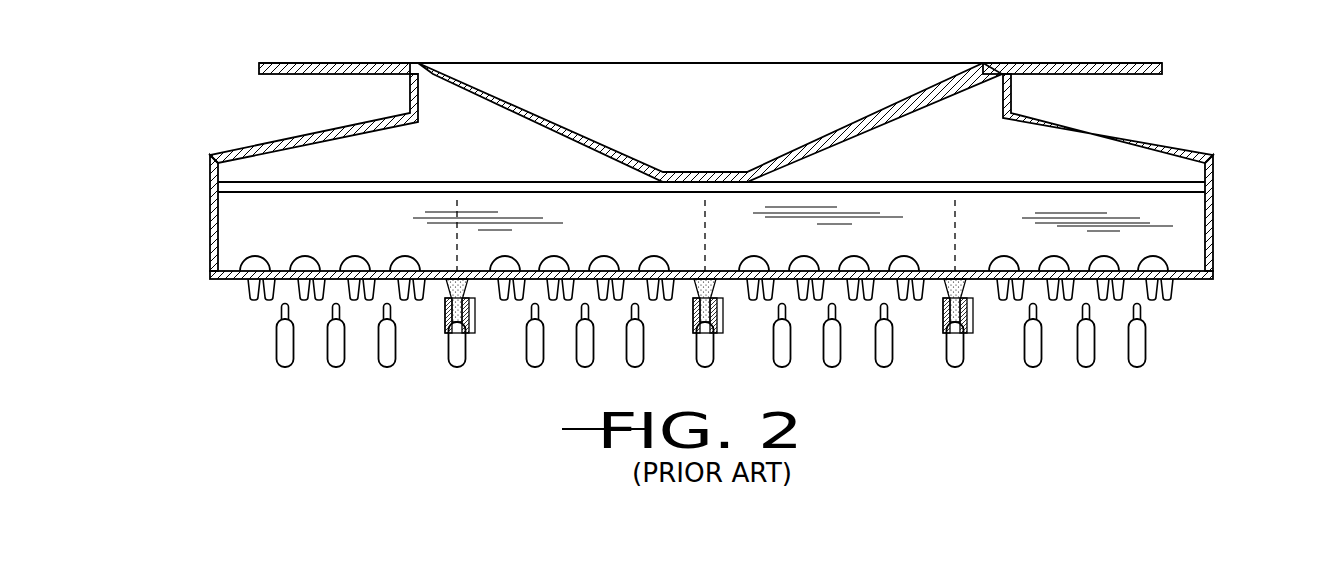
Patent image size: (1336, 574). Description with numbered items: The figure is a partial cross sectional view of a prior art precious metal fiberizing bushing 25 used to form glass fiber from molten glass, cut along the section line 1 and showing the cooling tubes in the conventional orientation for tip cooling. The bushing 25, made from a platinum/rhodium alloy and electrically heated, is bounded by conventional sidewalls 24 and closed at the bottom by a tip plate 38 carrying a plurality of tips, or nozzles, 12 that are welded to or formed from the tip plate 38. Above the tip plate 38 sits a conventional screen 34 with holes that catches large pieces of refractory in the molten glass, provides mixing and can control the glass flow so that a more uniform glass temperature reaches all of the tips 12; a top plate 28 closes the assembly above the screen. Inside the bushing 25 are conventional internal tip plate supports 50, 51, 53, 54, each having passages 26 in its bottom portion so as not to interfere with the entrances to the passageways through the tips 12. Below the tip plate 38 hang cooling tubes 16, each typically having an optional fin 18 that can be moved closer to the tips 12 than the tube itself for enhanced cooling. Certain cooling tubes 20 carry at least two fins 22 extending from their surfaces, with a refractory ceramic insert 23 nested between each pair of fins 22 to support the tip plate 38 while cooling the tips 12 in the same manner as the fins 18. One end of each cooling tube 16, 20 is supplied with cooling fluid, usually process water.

The section line 1- 1 is at (260, 31).
The tips 12 is at (1175, 285).
The cooling tubes 16 is at (1093, 362).
The fin 18 is at (1140, 305).
The cooling tubes 20 is at (713, 355).
The fins 22 is at (446, 300).
The refractory ceramic insert 23 is at (470, 280).
The sidewalls 24 is at (210, 225).
The bushing 25 is at (1160, 138).
The passages 26 is at (305, 257).
The top plate 28 is at (1117, 63).
The screen 34 is at (549, 113).
The tip plate 38 is at (230, 277).
The internal tip plate support 50 is at (238, 220).
The internal tip plate support 51 is at (942, 246).
The internal tip plate support 53 is at (642, 241).
The internal tip plate support 54 is at (1180, 239).